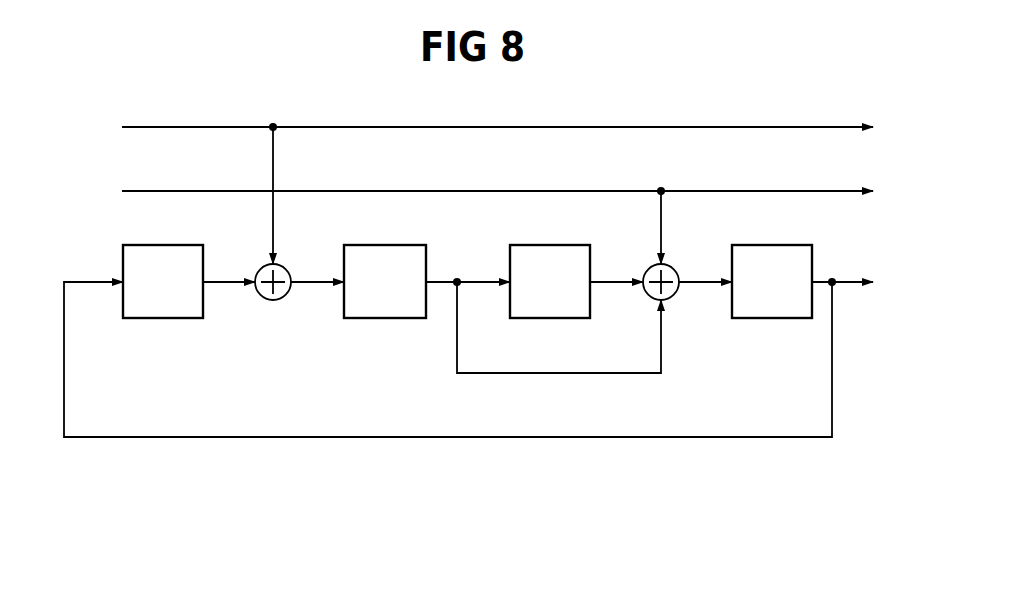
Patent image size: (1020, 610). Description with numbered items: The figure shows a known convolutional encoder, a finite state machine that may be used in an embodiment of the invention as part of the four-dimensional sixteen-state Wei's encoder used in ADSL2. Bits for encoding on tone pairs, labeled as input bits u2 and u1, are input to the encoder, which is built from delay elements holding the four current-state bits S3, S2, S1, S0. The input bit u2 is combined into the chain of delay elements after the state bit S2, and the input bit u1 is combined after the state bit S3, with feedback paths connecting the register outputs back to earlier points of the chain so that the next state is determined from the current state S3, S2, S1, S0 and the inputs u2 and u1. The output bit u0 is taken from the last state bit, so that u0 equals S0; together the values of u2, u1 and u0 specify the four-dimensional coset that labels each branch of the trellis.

The state bit S2 is at (189, 265).
The state bit S1 is at (427, 265).
The state bit S3 is at (576, 265).
The state bit S0 is at (772, 265).
The input bit u2 is at (479, 178).
The input bit u1 is at (479, 210).
The output bit u0 is at (842, 268).